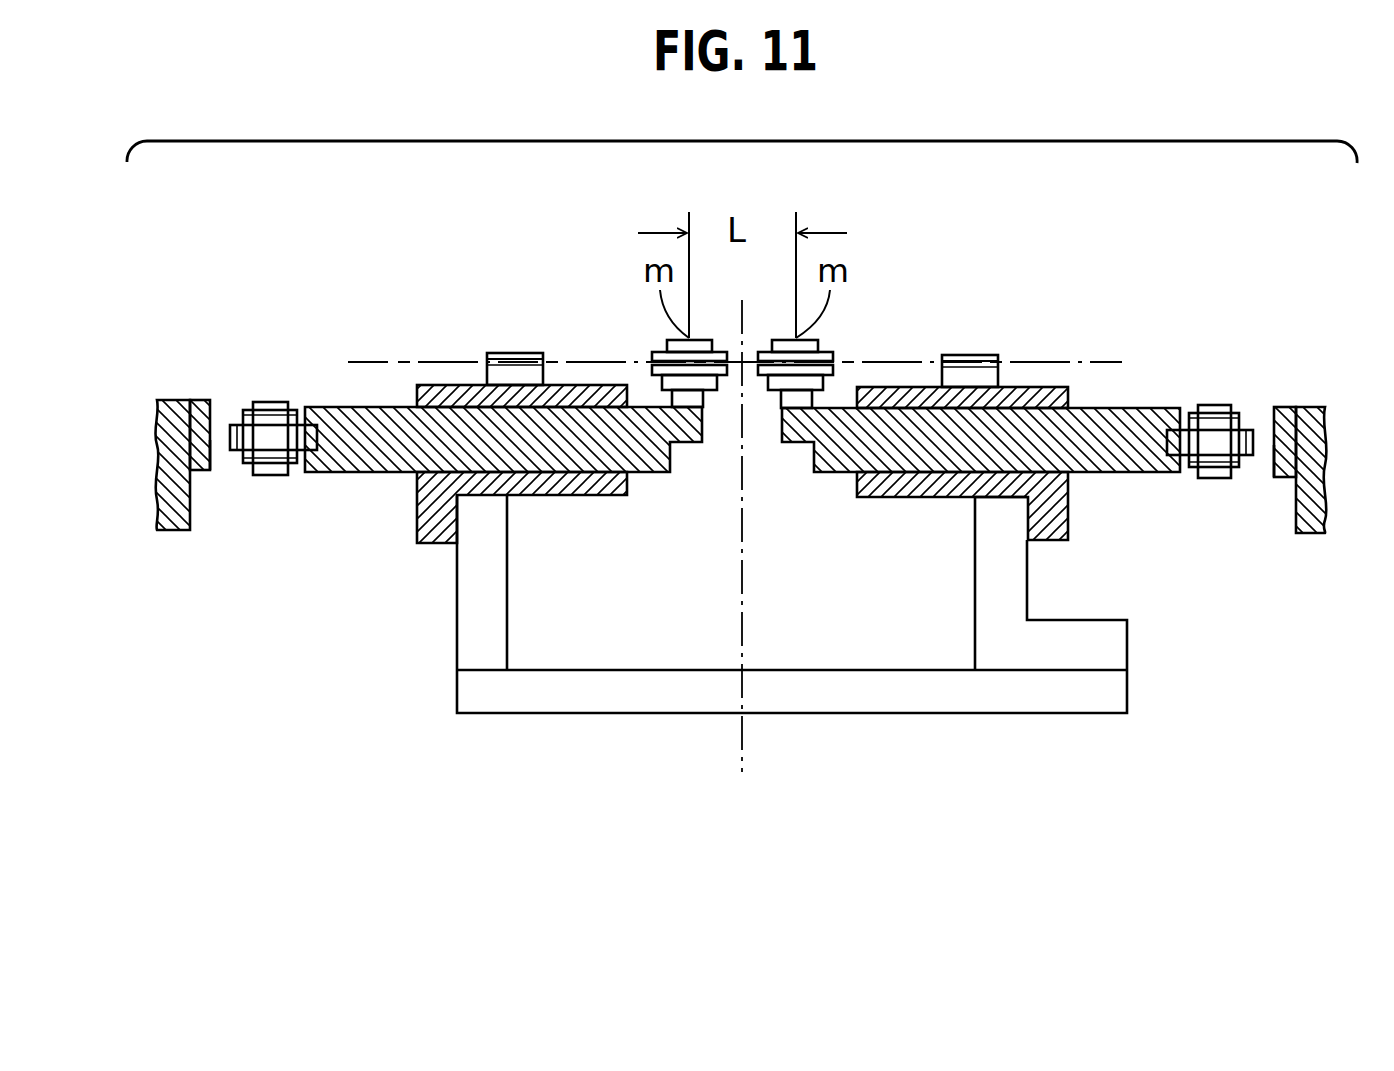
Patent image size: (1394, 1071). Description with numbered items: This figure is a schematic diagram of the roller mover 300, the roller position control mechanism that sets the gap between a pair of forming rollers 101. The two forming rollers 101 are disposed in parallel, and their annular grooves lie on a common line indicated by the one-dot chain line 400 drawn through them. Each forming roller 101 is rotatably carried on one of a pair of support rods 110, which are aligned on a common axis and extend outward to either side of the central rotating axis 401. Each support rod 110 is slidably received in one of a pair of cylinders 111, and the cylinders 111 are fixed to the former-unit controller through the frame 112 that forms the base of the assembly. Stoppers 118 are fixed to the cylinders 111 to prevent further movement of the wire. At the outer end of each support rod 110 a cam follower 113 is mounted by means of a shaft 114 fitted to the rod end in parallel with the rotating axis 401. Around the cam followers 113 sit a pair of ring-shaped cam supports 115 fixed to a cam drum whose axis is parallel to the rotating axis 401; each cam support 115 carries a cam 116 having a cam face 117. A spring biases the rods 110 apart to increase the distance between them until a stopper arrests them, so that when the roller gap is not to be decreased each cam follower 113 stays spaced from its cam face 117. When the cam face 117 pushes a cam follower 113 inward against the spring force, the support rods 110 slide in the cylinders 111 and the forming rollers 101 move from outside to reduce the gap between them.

The forming roller 101 is at (652, 356).
The support rod 110 is at (650, 453).
The cylinder 111 is at (603, 497).
The frame 112 is at (1064, 719).
The cam follower 113 is at (231, 413).
The shaft 114 is at (268, 432).
The ring-shaped cam support 115 is at (175, 531).
The cam 116 is at (200, 470).
The cam face 117 is at (212, 452).
The stopper 118 is at (508, 350).
The roller mover 300 is at (524, 769).
The one-dot chain line 400 is at (368, 360).
The rotating axis 401 is at (744, 563).